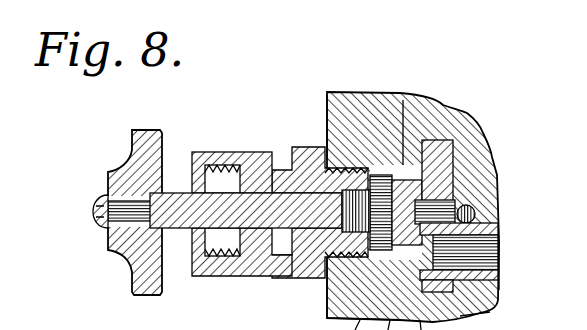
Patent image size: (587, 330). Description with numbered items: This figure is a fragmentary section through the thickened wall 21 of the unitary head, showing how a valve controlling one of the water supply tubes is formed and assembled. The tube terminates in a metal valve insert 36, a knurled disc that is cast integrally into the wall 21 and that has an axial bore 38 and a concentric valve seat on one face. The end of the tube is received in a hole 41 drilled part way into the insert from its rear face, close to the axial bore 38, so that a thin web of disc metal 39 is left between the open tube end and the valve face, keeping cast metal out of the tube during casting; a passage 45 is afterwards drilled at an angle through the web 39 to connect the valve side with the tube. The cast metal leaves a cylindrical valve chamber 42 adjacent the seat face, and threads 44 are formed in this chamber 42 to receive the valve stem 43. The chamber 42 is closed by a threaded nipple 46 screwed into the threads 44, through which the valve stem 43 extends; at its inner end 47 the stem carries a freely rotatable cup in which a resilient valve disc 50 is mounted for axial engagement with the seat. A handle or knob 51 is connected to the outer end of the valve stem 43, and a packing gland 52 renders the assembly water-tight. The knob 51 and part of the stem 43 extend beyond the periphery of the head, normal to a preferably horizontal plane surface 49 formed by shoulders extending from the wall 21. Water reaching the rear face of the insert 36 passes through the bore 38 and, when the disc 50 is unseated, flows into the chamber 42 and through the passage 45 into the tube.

The thickened wall 21 is at (540, 285).
The metal valve insert 36 is at (437, 181).
The axial bore 38 is at (440, 197).
The thin web of disc metal 39 is at (437, 252).
The hole 41 is at (475, 313).
The valve chamber 42 is at (403, 172).
The valve stem 43 is at (310, 170).
The threads 44 is at (343, 176).
The passage 45 is at (472, 258).
The threaded nipple 46 is at (345, 257).
The inner end of valve stem 47 is at (476, 213).
The plane surface 49 is at (327, 107).
The resilient valve disc 50 is at (408, 165).
The handle or knob 51 is at (150, 128).
The packing gland 52 is at (234, 150).